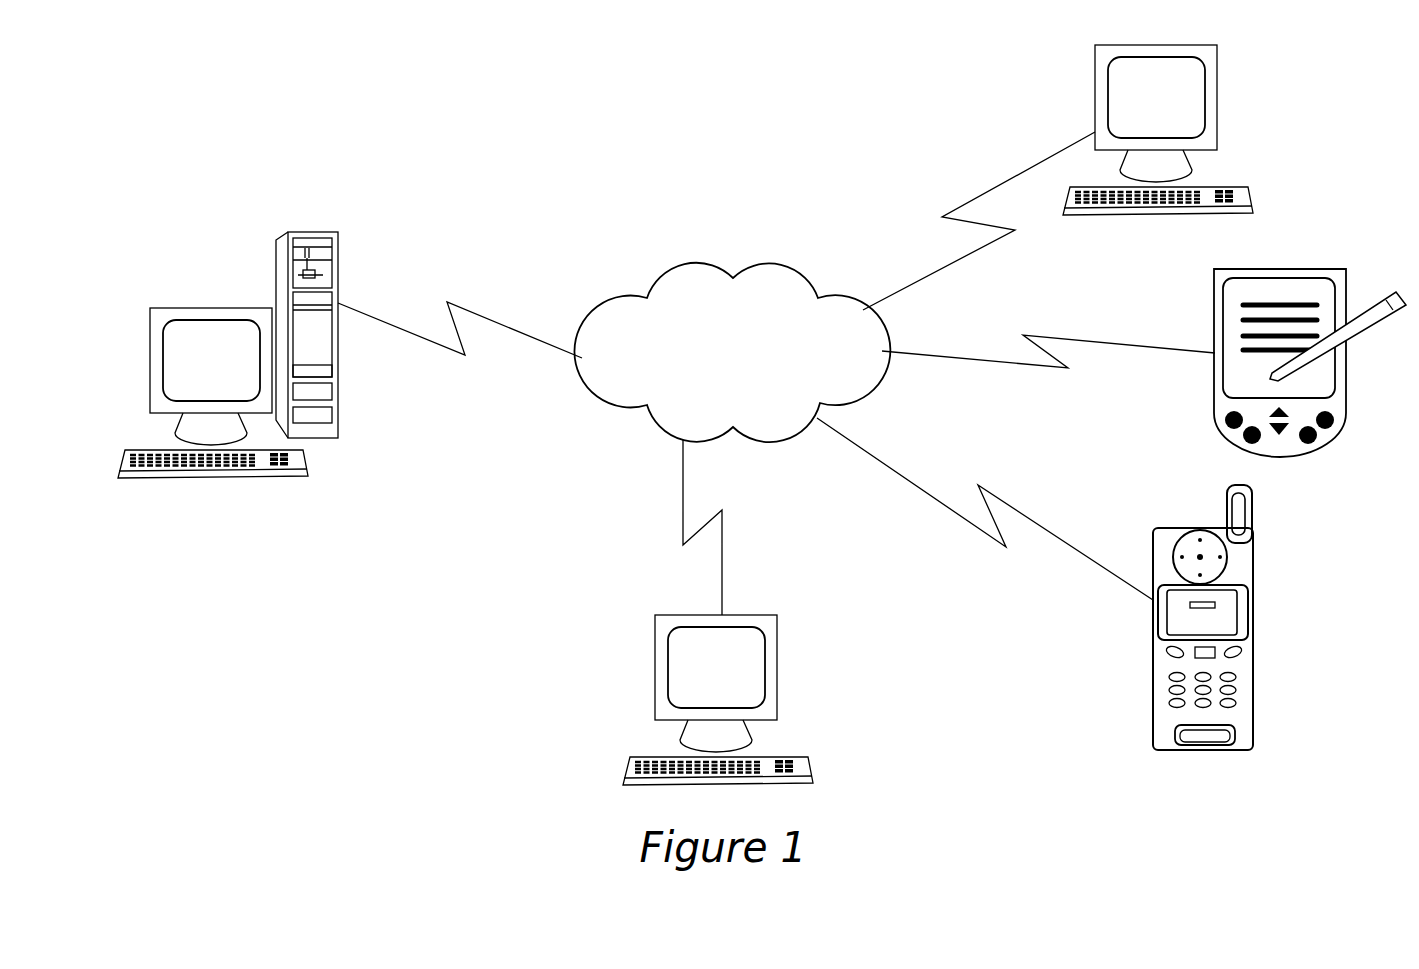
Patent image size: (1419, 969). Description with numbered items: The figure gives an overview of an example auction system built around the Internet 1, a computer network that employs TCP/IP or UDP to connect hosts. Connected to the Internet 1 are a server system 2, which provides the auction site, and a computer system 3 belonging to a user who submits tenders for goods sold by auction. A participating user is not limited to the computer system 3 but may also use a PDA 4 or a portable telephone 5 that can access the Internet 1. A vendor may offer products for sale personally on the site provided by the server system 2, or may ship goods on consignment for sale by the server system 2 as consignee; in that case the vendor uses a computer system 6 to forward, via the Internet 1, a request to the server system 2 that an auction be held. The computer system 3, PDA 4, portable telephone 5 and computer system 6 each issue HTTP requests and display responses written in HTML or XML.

The Internet 1 is at (693, 263).
The server system 2 is at (237, 308).
The computer system 3 is at (1218, 67).
The PDA 4 is at (1346, 280).
The portable telephone 5 is at (1253, 562).
The computer system 6 is at (662, 615).